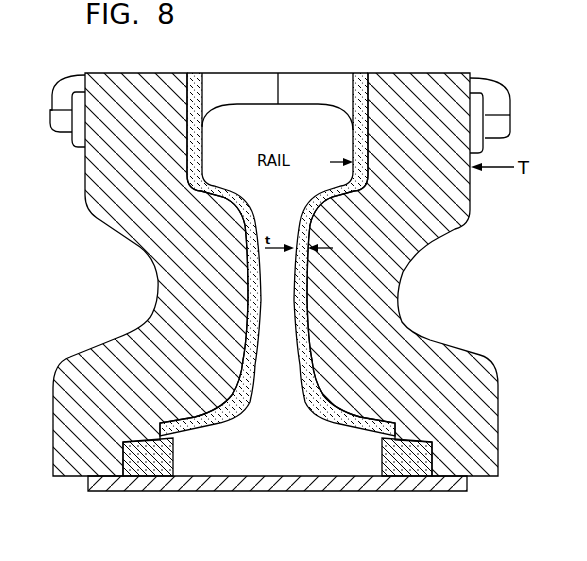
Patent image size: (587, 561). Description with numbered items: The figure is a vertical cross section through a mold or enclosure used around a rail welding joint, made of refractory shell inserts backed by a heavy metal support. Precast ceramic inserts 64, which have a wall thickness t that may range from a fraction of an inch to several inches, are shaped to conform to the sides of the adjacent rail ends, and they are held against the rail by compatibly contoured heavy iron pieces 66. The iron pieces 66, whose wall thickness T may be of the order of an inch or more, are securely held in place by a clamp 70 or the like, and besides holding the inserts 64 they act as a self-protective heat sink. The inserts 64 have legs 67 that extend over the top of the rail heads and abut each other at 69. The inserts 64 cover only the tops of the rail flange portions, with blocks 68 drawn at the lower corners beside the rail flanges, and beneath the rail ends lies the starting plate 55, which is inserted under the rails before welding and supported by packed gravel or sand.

The starting plate 55 is at (325, 489).
The ceramic inserts 64 is at (223, 426).
The heavy iron pieces 66 is at (164, 275).
The legs 67 is at (252, 85).
The clamping blocks 68 is at (150, 474).
The abutment of legs 69 is at (281, 73).
The clamp 70 is at (58, 95).